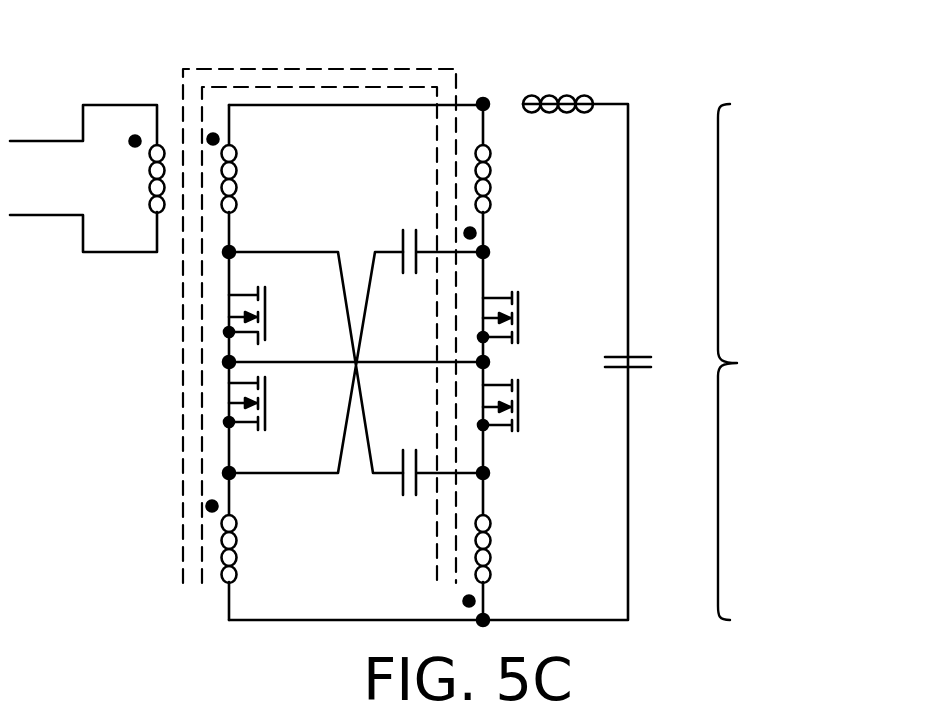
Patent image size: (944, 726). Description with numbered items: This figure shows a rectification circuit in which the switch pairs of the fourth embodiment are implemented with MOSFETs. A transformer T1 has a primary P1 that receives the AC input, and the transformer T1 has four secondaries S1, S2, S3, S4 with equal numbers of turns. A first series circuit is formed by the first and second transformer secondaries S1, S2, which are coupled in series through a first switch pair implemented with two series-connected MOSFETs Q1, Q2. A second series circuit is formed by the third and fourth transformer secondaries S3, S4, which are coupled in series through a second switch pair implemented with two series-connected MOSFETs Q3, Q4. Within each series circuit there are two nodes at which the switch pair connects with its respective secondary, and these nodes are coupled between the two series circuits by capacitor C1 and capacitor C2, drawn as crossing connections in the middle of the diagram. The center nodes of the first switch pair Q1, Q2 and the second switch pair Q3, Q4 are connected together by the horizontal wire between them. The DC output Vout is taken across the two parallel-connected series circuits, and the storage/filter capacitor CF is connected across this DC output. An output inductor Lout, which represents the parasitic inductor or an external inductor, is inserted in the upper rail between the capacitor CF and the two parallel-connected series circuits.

The AC input AC is at (83, 178).
The primary P1 is at (138, 175).
The transformer T1 is at (319, 307).
The first transformer secondary S1 is at (243, 178).
The second transformer secondary S2 is at (242, 546).
The third transformer secondary S3 is at (499, 178).
The fourth transformer secondary S4 is at (499, 546).
The MOSFET Q1 is at (269, 403).
The MOSFET Q2 is at (269, 315).
The MOSFET Q3 is at (523, 405).
The MOSFET Q4 is at (523, 317).
The capacitor C1 is at (436, 230).
The capacitor C2 is at (435, 495).
The output inductor Lout is at (558, 85).
The storage/filter capacitor CF is at (649, 365).
The DC output Vout is at (808, 362).